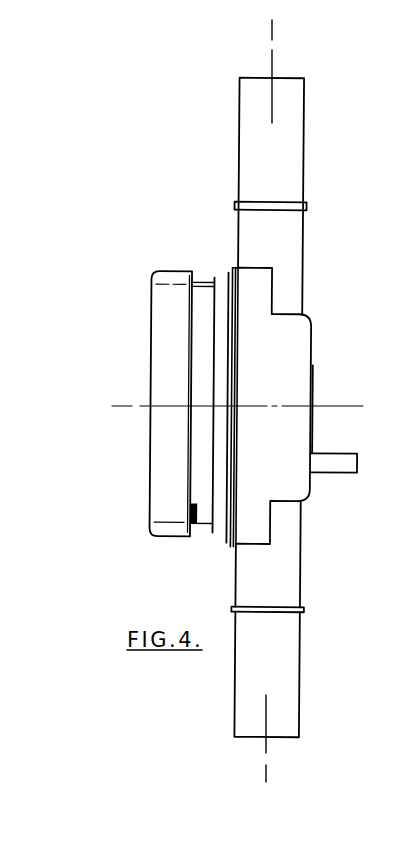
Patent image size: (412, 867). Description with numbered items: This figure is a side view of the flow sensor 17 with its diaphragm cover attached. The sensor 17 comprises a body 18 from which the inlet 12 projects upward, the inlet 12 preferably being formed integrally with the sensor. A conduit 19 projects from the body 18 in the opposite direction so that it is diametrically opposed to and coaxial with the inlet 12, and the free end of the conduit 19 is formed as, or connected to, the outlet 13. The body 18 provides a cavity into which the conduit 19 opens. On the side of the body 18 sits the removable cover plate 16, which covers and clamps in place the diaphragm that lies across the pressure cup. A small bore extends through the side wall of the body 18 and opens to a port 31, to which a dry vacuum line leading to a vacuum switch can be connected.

The inlet 12 is at (282, 171).
The outlet 13 is at (282, 694).
The removable cover plate 16 is at (177, 277).
The flow sensor 17 is at (313, 500).
The body 18 is at (290, 350).
The conduit 19 is at (240, 580).
The port 31 is at (330, 452).